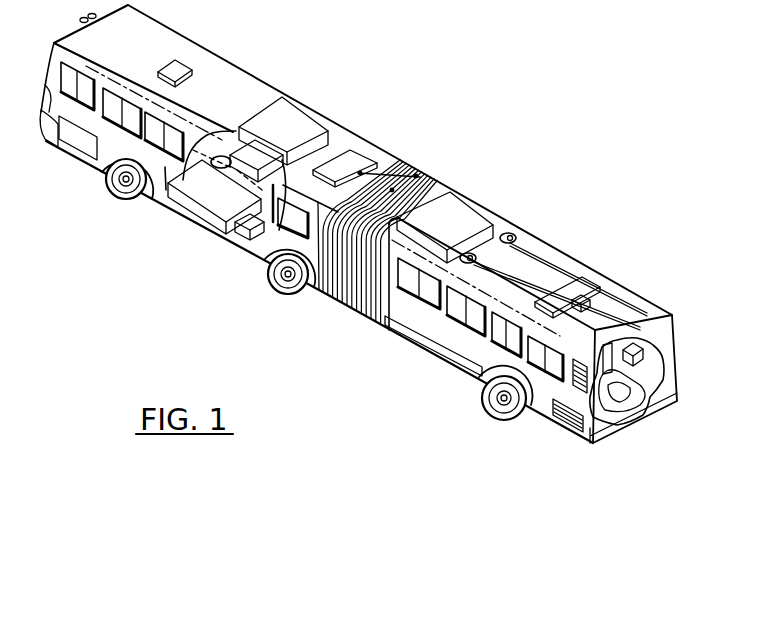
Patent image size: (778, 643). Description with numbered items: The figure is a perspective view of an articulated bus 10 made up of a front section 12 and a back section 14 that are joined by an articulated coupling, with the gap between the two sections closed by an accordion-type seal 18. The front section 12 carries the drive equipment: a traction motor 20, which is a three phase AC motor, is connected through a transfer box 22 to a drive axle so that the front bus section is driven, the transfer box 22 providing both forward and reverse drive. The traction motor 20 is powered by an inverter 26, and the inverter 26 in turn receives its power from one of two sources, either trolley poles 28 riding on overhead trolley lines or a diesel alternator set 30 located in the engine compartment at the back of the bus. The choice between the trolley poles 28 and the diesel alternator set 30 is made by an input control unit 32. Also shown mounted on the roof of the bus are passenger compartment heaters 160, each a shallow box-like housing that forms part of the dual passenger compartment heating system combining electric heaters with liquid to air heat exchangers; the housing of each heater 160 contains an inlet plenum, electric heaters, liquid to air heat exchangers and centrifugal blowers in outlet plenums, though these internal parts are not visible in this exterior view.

The articulated bus 10 is at (455, 161).
The front section 12 is at (163, 40).
The back section 14 is at (600, 280).
The accordion-type seal 18 is at (415, 170).
The traction motor 20 is at (223, 160).
The transfer box 22 is at (263, 173).
The inverter 26 is at (200, 210).
The trolley poles 28 is at (522, 248).
The diesel alternator set 30 is at (633, 423).
The input control unit 32 is at (533, 260).
The passenger compartment heater 160 is at (285, 115).